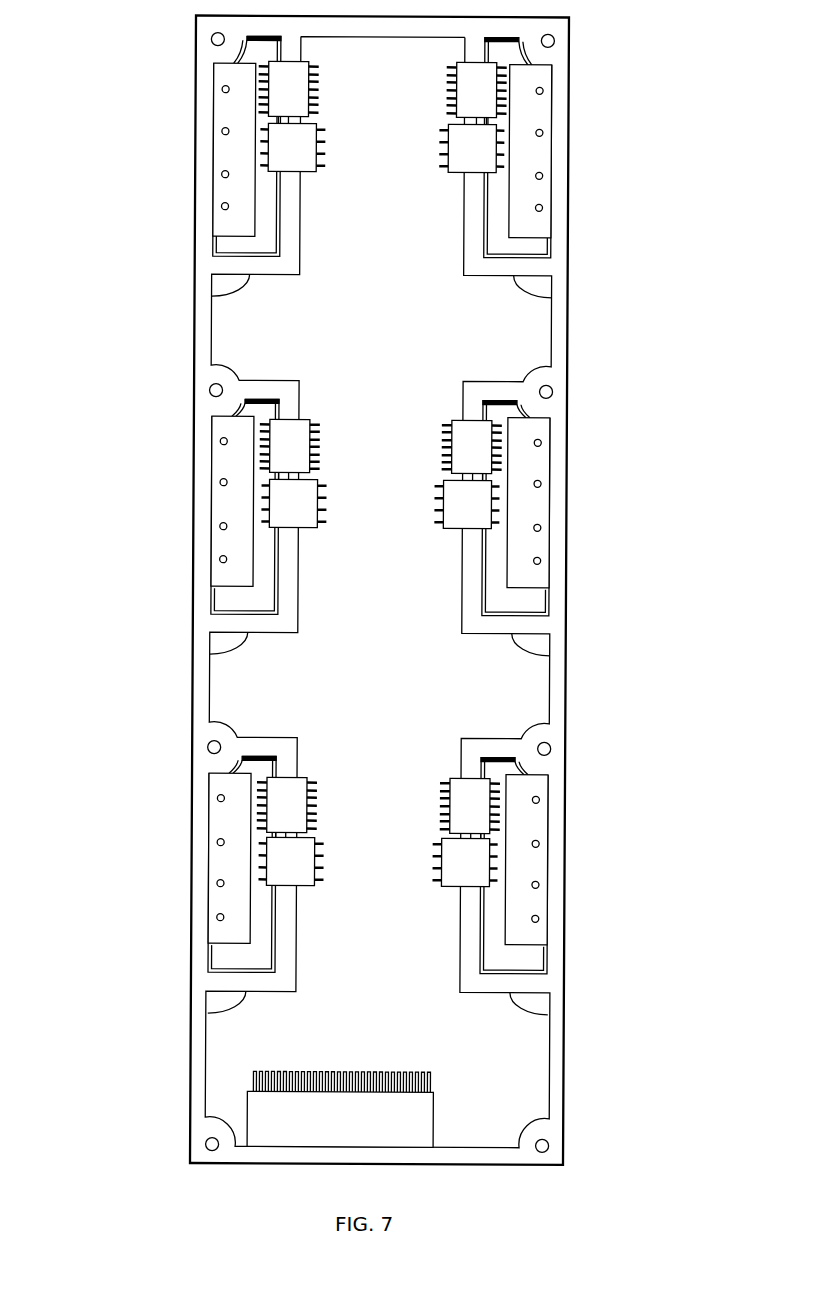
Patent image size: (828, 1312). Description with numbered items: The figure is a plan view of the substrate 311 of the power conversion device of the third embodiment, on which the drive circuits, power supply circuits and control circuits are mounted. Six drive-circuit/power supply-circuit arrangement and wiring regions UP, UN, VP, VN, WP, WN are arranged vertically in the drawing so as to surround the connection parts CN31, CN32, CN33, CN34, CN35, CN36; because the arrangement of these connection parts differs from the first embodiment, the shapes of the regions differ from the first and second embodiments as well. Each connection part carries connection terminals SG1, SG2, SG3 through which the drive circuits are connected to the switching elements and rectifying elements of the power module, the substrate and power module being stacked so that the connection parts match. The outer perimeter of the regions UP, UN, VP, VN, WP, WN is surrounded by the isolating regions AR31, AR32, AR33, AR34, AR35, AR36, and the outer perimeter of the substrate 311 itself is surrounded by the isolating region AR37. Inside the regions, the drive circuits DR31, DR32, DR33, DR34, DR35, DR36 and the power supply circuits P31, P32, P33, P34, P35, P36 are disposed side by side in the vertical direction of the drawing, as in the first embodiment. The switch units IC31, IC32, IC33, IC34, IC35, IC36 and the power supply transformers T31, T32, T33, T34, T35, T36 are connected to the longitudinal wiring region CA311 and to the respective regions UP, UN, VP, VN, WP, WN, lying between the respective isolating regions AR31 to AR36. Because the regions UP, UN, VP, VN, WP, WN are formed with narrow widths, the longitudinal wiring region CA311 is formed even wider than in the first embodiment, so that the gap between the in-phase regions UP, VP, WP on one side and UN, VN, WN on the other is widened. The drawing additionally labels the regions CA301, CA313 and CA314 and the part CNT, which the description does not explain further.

The substrate 311 is at (569, 349).
The central wiring area CA301 is at (319, 333).
The longitudinal wiring region CA311 is at (378, 617).
The wiring area CA313 is at (494, 700).
The wiring area CA314 is at (495, 1068).
The isolating region AR31 is at (238, 292).
The isolating region AR32 is at (518, 279).
The isolating region AR33 is at (238, 650).
The isolating region AR34 is at (512, 640).
The isolating region AR35 is at (238, 1008).
The isolating region AR36 is at (512, 996).
The isolating region AR37 is at (200, 692).
The power supply circuit P31 is at (220, 244).
The power supply circuit P32 is at (540, 249).
The power supply circuit P33 is at (220, 601).
The power supply circuit P34 is at (540, 600).
The power supply circuit P35 is at (219, 959).
The power supply circuit P36 is at (539, 958).
The drive circuit DR31 is at (237, 53).
The drive circuit DR32 is at (507, 57).
The drive circuit DR33 is at (236, 415).
The drive circuit DR34 is at (508, 413).
The drive circuit DR35 is at (235, 771).
The drive circuit DR36 is at (507, 771).
The connection part CN31 is at (229, 110).
The connection part CN32 is at (531, 110).
The connection part CN33 is at (229, 463).
The connection part CN34 is at (530, 463).
The connection part CN35 is at (228, 820).
The connection part CN36 is at (530, 819).
The connection terminal SG1 is at (220, 208).
The connection terminal SG2 is at (220, 176).
The connection terminal SG3 is at (220, 133).
The switch unit IC31 is at (289, 84).
The switch unit IC32 is at (472, 101).
The switch unit IC33 is at (291, 440).
The switch unit IC34 is at (470, 456).
The switch unit IC35 is at (291, 795).
The switch unit IC36 is at (470, 810).
The power supply transformer T31 is at (289, 138).
The power supply transformer T32 is at (472, 155).
The power supply transformer T33 is at (291, 494).
The power supply transformer T34 is at (470, 510).
The power supply transformer T35 is at (292, 852).
The power supply transformer T36 is at (470, 868).
The drive-circuit/power supply-circuit arrangement and wiring region UP is at (262, 233).
The drive-circuit/power supply-circuit arrangement and wiring region UN is at (498, 233).
The drive-circuit/power supply-circuit arrangement and wiring region VP is at (260, 588).
The drive-circuit/power supply-circuit arrangement and wiring region VN is at (497, 585).
The drive-circuit/power supply-circuit arrangement and wiring region WP is at (259, 945).
The drive-circuit/power supply-circuit arrangement and wiring region WN is at (501, 945).
The control connector CNT is at (241, 1083).